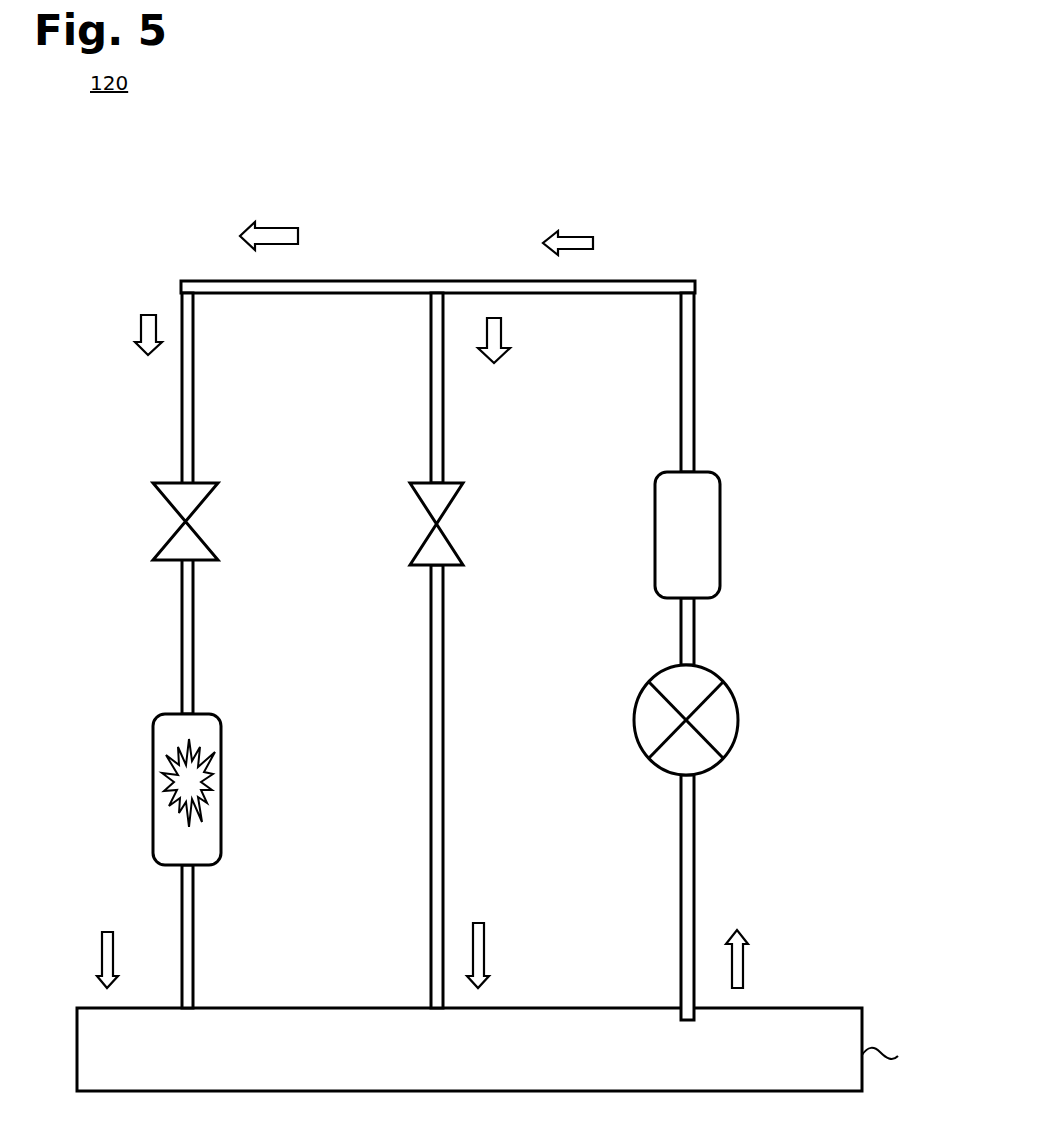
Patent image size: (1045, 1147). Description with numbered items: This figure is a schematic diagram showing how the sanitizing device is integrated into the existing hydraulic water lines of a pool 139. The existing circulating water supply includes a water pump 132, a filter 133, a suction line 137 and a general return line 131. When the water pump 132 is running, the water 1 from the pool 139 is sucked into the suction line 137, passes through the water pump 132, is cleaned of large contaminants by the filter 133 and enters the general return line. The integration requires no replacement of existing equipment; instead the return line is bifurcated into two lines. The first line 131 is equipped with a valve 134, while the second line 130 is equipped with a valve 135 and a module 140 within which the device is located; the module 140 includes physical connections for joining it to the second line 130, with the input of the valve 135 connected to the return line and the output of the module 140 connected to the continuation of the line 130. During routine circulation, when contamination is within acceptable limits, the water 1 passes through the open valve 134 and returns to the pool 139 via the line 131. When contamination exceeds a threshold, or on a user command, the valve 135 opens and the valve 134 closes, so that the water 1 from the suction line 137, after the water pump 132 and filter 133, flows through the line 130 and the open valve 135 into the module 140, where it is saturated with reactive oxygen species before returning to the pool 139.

The water 1 is at (505, 1040).
The second line 130 is at (180, 413).
The general return line 131 is at (433, 435).
The water pump 132 is at (732, 697).
The filter 133 is at (720, 563).
The valve 134 is at (425, 503).
The valve 135 is at (173, 513).
The suction line 137 is at (693, 908).
The pool 139 is at (903, 1058).
The module 140 is at (153, 815).